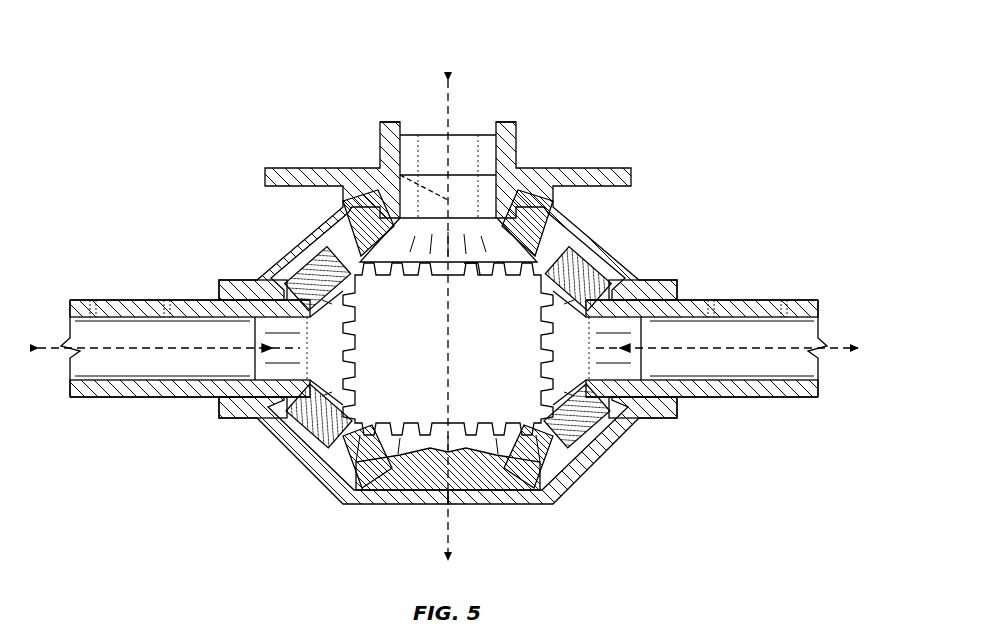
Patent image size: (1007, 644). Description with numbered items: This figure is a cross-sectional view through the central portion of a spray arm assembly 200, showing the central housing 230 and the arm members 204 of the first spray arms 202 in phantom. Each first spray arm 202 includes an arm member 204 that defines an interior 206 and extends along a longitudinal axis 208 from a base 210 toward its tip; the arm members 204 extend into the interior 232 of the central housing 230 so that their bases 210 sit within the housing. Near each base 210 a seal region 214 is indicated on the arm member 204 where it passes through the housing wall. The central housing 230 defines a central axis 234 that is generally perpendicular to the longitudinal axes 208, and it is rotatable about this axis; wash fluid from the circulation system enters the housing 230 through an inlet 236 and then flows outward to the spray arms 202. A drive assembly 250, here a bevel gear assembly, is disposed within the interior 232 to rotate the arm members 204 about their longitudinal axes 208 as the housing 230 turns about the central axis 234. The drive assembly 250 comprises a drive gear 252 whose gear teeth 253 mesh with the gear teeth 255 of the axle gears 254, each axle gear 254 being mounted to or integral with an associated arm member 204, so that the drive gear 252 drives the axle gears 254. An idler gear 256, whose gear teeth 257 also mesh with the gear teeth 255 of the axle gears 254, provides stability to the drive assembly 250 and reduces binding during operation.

The spray arm assembly 200 is at (651, 66).
The first spray arm 202 is at (65, 294).
The arm member 204 is at (134, 298).
The interior 206 is at (147, 332).
The longitudinal axis 208 is at (188, 350).
The base 210 is at (246, 290).
The seal 214 is at (90, 290).
The central housing 230 is at (284, 212).
The interior 232 is at (432, 333).
The central axis 234 is at (380, 150).
The inlet 236 is at (454, 158).
The drive assembly 250 is at (320, 441).
The drive gear 252 is at (345, 494).
The gear teeth 253 is at (412, 430).
The axle gear 254 is at (583, 262).
The gear teeth 255 is at (351, 378).
The idler gear 256 is at (562, 240).
The gear teeth 257 is at (477, 273).